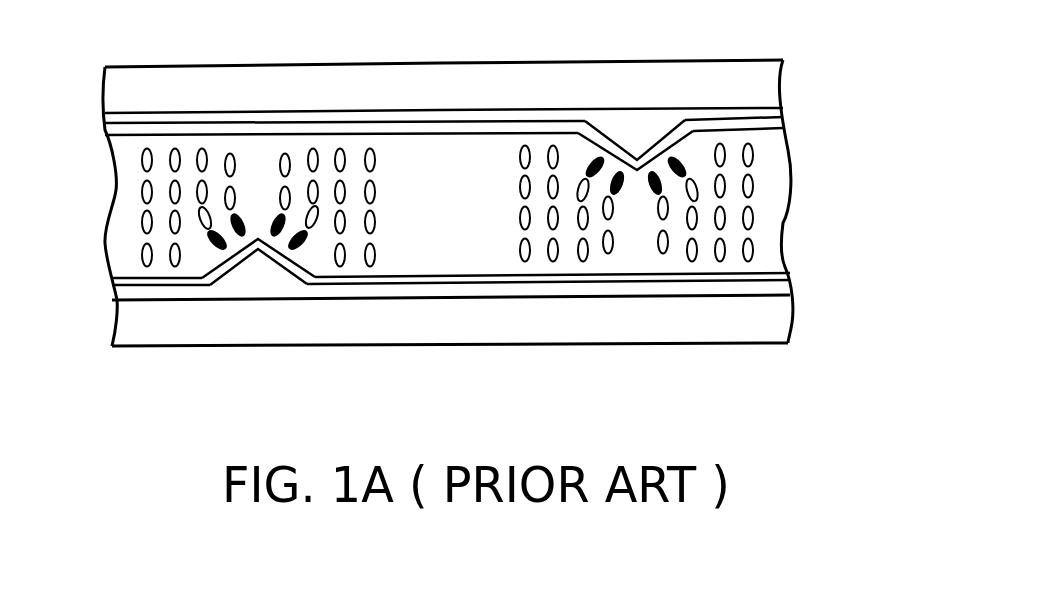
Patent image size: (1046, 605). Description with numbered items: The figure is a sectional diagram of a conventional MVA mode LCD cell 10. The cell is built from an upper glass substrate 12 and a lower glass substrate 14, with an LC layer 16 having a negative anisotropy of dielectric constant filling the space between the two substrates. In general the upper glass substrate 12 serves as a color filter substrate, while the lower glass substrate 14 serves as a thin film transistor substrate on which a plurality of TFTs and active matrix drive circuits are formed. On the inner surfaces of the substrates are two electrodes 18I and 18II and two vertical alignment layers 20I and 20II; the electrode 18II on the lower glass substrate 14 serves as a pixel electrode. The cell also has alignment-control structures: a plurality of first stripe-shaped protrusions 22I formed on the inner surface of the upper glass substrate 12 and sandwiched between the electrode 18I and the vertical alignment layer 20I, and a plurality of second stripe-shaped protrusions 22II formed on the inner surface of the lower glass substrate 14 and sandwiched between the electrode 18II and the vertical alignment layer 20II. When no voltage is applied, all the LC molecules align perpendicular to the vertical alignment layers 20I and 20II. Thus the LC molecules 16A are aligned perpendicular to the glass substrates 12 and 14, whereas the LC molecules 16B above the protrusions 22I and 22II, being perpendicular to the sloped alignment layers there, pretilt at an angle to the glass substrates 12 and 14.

The MVA mode LCD cell 10 is at (92, 366).
The upper glass substrate 12 is at (708, 75).
The lower glass substrate 14 is at (187, 346).
The LC layer 16 is at (768, 153).
The LC molecules 16A is at (522, 218).
The LC molecules above the protrusions 16B is at (277, 214).
The electrode 18I is at (545, 115).
The electrode 18II is at (348, 293).
The vertical alignment layer 20I is at (463, 130).
The vertical alignment layer 20II is at (430, 278).
The first stripe-shaped protrusions 22I is at (635, 133).
The second stripe-shaped protrusions 22II is at (262, 275).